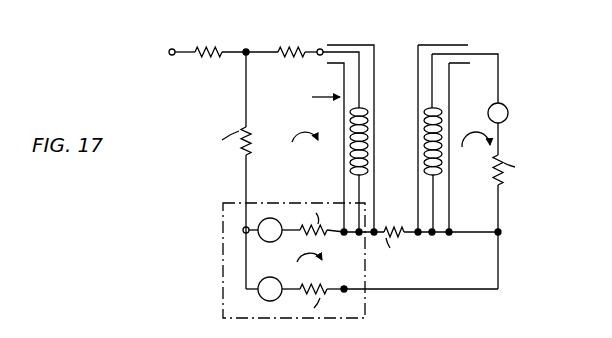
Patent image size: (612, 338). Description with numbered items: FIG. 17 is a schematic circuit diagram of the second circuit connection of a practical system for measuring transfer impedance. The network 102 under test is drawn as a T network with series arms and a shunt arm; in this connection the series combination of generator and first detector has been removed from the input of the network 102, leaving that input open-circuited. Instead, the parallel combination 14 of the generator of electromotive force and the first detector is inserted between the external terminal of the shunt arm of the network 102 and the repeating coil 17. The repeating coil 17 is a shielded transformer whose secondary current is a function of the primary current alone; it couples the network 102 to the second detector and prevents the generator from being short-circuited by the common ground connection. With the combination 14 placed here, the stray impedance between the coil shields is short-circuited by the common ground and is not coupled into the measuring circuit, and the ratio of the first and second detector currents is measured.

The network under test 102 is at (272, 23).
The repeating coil 17 is at (410, 110).
The parallel combination of generator and first detector 14 is at (223, 258).